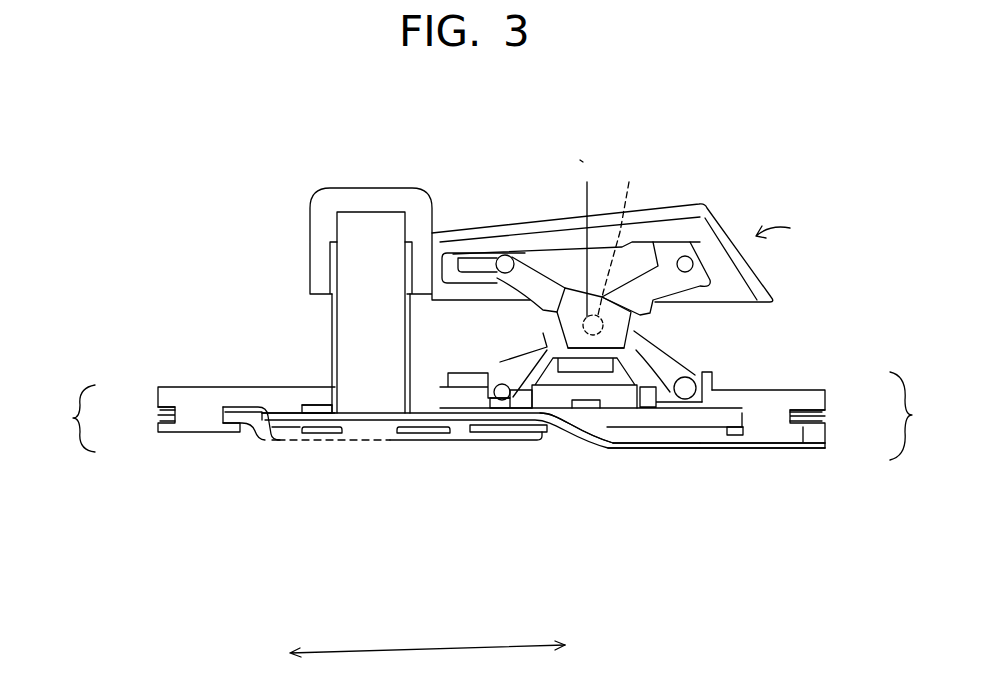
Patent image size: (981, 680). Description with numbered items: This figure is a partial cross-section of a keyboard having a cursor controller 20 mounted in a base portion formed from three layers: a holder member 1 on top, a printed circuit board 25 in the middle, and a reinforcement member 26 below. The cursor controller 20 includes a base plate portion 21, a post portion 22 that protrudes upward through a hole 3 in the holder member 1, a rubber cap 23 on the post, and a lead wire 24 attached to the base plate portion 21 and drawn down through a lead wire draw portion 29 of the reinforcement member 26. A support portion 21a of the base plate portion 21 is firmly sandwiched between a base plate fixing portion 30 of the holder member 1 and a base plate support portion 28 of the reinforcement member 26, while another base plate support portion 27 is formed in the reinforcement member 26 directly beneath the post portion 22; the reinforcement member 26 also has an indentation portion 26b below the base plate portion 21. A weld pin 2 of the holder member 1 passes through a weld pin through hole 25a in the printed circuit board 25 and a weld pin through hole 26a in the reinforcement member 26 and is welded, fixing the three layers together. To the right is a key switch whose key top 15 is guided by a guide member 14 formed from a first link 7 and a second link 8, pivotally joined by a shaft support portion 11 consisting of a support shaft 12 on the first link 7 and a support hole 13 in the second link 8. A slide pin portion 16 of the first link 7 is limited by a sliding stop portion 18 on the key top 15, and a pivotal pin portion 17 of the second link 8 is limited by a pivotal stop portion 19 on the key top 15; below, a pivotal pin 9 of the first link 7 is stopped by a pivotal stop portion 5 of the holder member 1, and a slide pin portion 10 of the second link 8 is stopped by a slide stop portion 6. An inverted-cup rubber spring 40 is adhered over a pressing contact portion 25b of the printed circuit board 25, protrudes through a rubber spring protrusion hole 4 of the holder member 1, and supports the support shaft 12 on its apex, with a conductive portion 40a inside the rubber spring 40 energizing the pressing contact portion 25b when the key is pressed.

The holder member 1 is at (163, 398).
The weld pin 2 is at (183, 432).
The hole 3 is at (333, 405).
The rubber spring protrusion hole 4 is at (660, 444).
The pivotal stop portion 5 is at (718, 383).
The slide stop portion 6 is at (455, 378).
The first link 7 is at (665, 368).
The second link 8 is at (640, 320).
The pivotal pin 9 is at (698, 377).
The slide pin portion 10 is at (500, 384).
The shaft support portion 11 is at (631, 150).
The support shaft 12 is at (596, 235).
The support hole 13 is at (624, 234).
The guide member 14 is at (684, 322).
The key top 15 is at (762, 272).
The slide pin portion 16 is at (509, 256).
The pivotal pin portion 17 is at (688, 250).
The sliding stop portion 18 is at (452, 266).
The pivotal stop portion 19 is at (710, 247).
The cursor controller 20 is at (288, 318).
The base plate portion 21 is at (395, 435).
The support portion 21a is at (280, 440).
The post portion 22 is at (395, 322).
The rubber cap 23 is at (417, 200).
The lead wire 24 is at (808, 448).
The printed circuit board 25 is at (157, 412).
The weld pin through hole 25a is at (217, 407).
The pressing contact portion 25b is at (558, 440).
The reinforcement member 26 is at (158, 423).
The weld pin through hole 26a is at (225, 430).
The indentation portion 26b is at (445, 440).
The base plate support portion 27 is at (378, 440).
The base plate support portion 28 is at (305, 445).
The lead wire draw portion 29 is at (490, 452).
The base plate fixing portion 30 is at (267, 413).
The rubber spring 40 is at (548, 352).
The conductive portion 40a is at (592, 362).